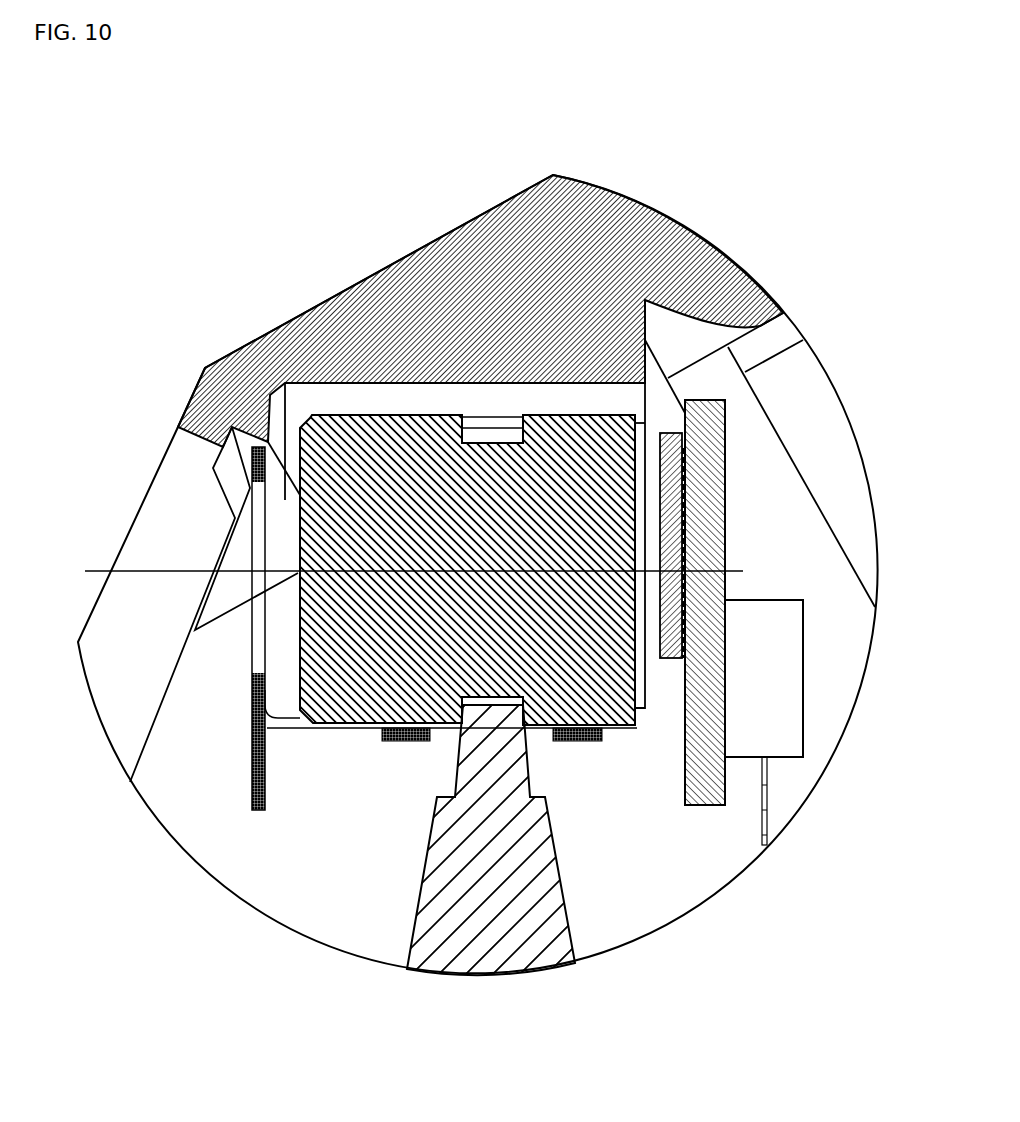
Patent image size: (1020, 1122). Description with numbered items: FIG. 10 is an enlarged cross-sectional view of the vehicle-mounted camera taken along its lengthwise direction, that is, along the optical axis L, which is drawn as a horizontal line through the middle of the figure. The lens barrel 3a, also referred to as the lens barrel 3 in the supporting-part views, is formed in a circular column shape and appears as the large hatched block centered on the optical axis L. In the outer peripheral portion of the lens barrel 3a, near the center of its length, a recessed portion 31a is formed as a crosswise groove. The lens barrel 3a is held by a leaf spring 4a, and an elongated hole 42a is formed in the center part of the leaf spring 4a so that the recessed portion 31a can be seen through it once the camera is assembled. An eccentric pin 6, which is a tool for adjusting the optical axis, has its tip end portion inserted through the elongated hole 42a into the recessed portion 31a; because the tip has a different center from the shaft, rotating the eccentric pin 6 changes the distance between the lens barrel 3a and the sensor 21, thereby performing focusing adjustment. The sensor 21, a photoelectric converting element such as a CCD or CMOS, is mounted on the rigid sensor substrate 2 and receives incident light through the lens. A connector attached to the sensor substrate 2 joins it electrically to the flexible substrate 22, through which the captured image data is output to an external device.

The lens barrel 3 is at (480, 311).
The lens barrel 3a is at (355, 440).
The recessed portion 31a is at (490, 443).
The eccentric pin 6 is at (508, 943).
The leaf spring 4a is at (255, 656).
The elongated hole 42a is at (542, 735).
The sensor 21 is at (673, 490).
The sensor substrate 2 is at (720, 430).
The flexible substrate 22 is at (767, 812).
The optical axis L is at (137, 568).